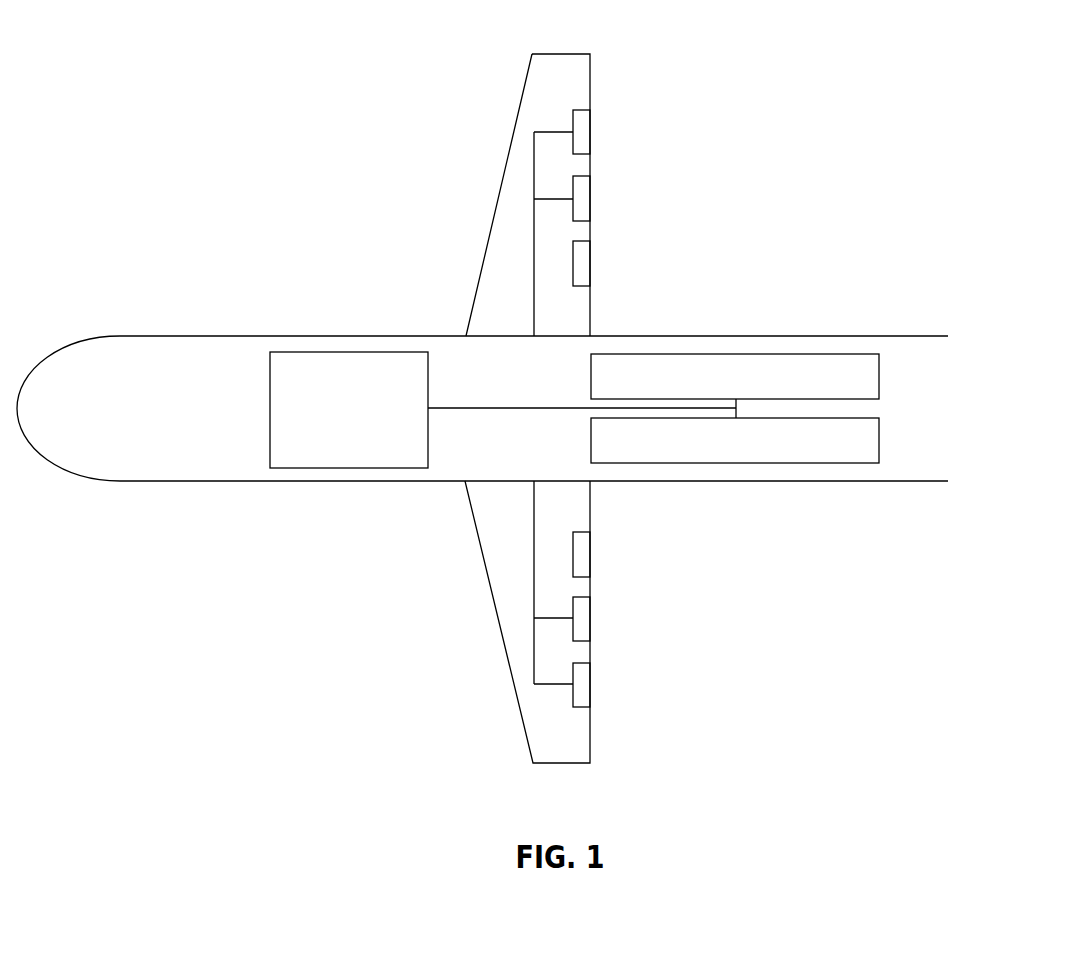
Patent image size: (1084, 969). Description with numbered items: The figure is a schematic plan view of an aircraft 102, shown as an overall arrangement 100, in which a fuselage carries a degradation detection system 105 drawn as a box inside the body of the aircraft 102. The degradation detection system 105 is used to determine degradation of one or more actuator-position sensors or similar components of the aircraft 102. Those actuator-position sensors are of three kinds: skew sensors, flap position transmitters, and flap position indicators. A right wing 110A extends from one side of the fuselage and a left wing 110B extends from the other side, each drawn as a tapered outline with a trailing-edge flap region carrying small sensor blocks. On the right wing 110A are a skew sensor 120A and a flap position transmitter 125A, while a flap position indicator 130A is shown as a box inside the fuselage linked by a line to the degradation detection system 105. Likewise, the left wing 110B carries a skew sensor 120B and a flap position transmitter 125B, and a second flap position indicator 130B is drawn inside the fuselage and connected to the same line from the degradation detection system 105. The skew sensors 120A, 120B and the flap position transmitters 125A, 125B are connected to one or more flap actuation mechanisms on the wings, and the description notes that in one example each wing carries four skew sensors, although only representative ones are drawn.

The aircraft 100 is at (226, 68).
The aircraft 102 is at (193, 336).
The degradation detection system 105 is at (270, 445).
The right wing 110A is at (505, 263).
The left wing 110B is at (505, 556).
The skew sensor 120A is at (588, 194).
The skew sensor 120B is at (590, 622).
The flap position transmitter 125A is at (588, 131).
The flap position transmitter 125B is at (590, 686).
The flap position indicator 130A is at (879, 376).
The flap position indicator 130B is at (879, 441).